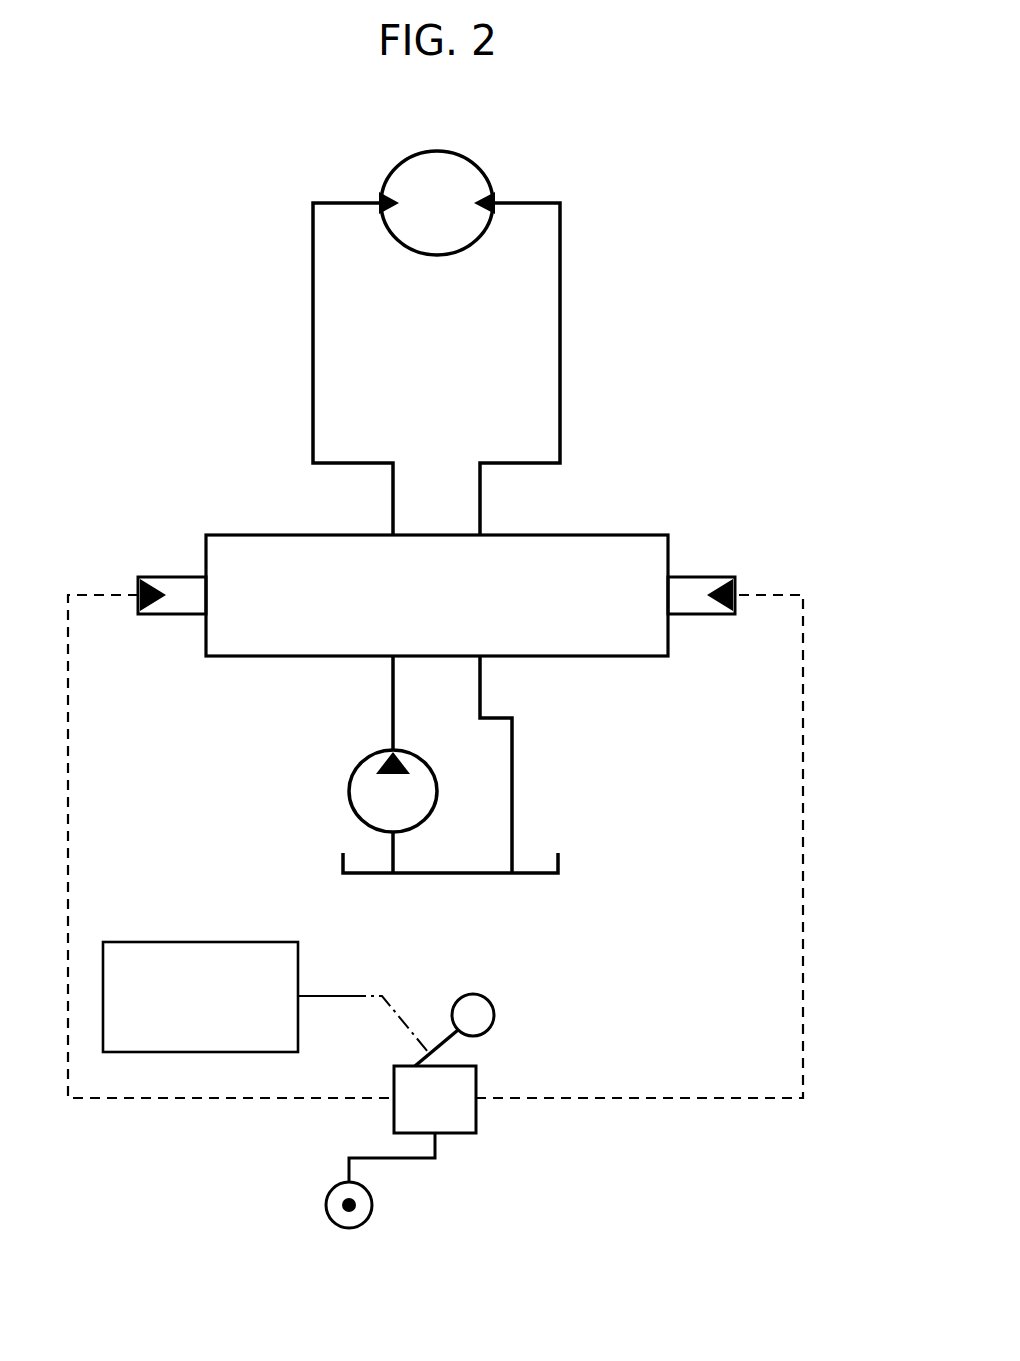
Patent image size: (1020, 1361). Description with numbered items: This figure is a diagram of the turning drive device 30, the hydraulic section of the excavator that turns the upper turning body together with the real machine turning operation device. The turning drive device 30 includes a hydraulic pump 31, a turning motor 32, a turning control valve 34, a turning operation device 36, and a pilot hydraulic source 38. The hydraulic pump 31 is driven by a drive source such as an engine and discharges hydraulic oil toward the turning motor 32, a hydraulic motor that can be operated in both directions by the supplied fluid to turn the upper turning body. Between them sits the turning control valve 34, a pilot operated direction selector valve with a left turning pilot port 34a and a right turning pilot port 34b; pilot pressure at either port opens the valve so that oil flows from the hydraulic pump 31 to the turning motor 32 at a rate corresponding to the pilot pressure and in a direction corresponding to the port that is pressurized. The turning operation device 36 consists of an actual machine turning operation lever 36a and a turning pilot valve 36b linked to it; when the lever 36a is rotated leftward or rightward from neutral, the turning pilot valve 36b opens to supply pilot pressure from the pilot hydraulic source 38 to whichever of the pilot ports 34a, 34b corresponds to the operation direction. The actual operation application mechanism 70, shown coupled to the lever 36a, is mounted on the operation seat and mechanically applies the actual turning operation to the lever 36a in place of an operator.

The turning drive device 30 is at (634, 269).
The hydraulic pump 31 is at (350, 785).
The turning motor 32 is at (438, 151).
The turning control valve 34 is at (598, 534).
The left turning pilot port 34a is at (172, 576).
The right turning pilot port 34b is at (703, 576).
The turning operation device 36 is at (507, 1049).
The actual machine turning operation lever 36a is at (452, 1038).
The turning pilot valve 36b is at (476, 1118).
The pilot hydraulic source 38 is at (372, 1200).
The actual operation application mechanism 70 is at (222, 941).